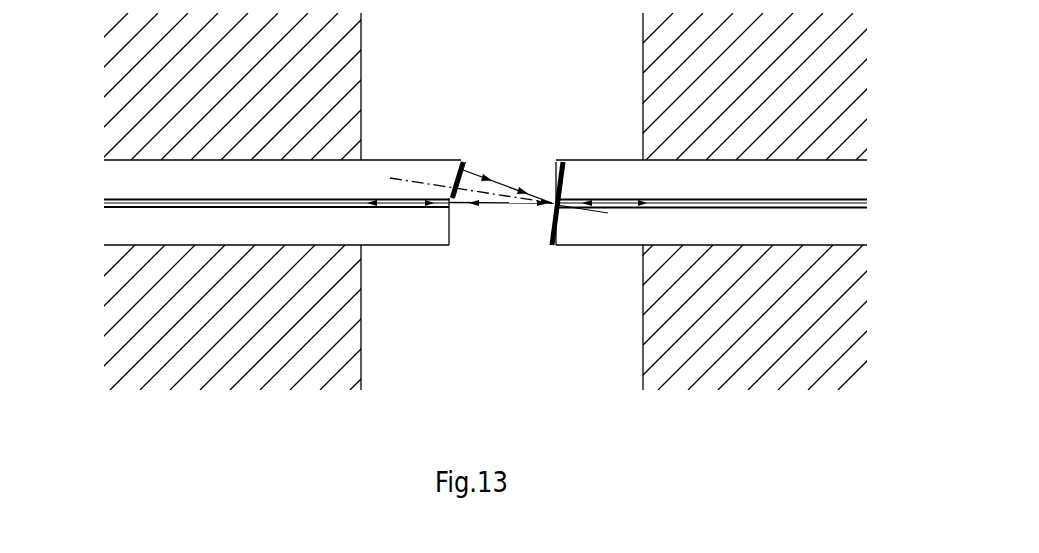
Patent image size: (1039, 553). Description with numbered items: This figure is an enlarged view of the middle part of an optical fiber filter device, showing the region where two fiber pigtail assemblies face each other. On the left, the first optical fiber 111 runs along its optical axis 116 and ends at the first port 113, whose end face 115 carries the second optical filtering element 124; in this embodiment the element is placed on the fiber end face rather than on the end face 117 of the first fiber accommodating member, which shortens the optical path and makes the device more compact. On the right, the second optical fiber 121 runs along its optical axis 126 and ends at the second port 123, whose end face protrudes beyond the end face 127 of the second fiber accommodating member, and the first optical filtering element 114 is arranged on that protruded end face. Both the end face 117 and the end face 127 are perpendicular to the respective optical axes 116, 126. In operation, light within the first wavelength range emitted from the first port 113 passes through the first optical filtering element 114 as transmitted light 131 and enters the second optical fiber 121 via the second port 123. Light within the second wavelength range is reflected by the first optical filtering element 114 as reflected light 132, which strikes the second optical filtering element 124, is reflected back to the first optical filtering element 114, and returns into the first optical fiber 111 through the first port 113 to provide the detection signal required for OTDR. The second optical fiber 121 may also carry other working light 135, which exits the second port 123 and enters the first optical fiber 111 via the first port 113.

The first optical fiber 111 is at (128, 177).
The first port 113 is at (422, 165).
The first optical filtering element 114 is at (567, 163).
The end face of the first port 115 is at (450, 163).
The optical axis of the first optical fiber 116 is at (142, 203).
The end face of the first fiber accommodating member 117 is at (362, 74).
The second optical fiber 121 is at (843, 182).
The second port 123 is at (568, 225).
The second optical filtering element 124 is at (467, 162).
The optical axis of the second optical fiber 126 is at (822, 203).
The end face of the second fiber accommodating member 127 is at (642, 62).
The transmitted light 131 is at (483, 205).
The reflected light 132 is at (502, 184).
The other working light 135 is at (613, 203).